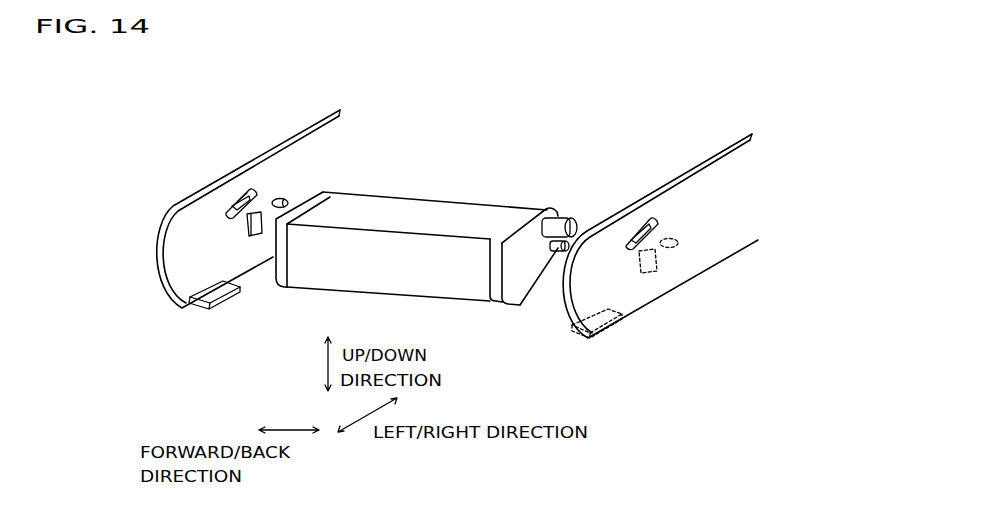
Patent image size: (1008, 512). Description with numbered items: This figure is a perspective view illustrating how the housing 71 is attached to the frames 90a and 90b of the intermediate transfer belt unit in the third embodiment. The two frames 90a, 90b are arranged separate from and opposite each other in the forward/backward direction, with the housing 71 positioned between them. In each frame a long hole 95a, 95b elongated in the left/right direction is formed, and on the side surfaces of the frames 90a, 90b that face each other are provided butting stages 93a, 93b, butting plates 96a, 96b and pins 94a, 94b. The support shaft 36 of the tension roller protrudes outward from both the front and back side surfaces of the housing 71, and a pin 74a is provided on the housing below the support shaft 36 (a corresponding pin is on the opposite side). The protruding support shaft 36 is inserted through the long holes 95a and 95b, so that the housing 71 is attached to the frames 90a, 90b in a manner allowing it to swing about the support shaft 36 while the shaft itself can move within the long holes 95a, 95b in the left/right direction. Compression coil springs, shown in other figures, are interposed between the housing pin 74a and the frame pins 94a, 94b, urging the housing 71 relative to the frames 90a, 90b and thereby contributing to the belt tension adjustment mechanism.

The support shaft 36 is at (561, 222).
The housing 71 is at (417, 213).
The pin 74a is at (547, 253).
The frame 90a is at (723, 215).
The frame 90b is at (152, 240).
The butting stage 93a is at (586, 310).
The butting stage 93b is at (206, 292).
The pin 94a is at (669, 238).
The pin 94b is at (283, 197).
The long hole 95a is at (662, 220).
The long hole 95b is at (256, 190).
The butting plate 96a is at (645, 273).
The butting plate 96b is at (254, 237).